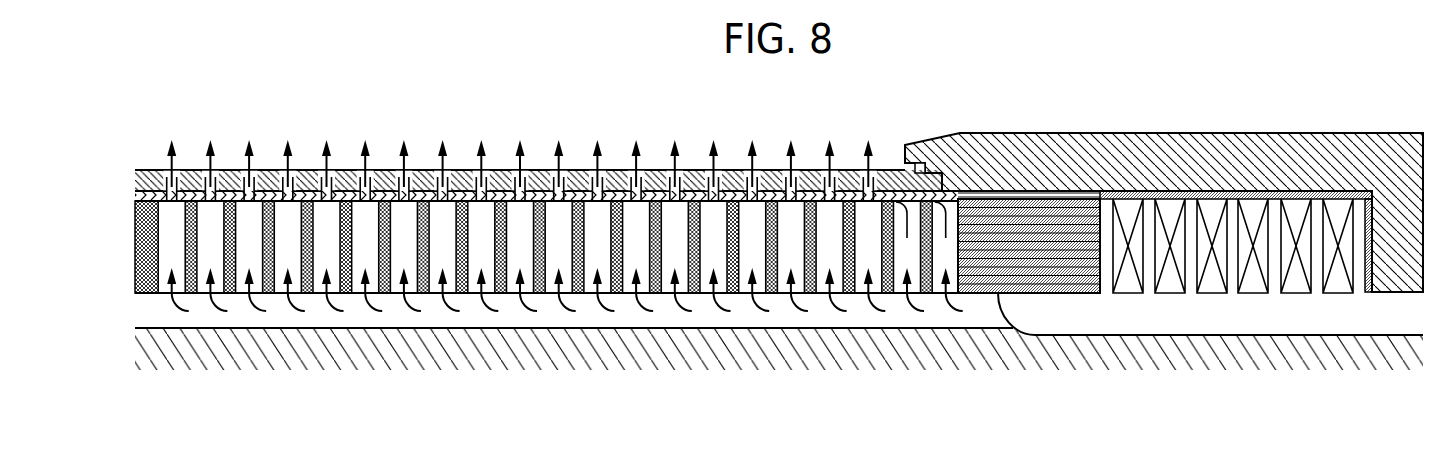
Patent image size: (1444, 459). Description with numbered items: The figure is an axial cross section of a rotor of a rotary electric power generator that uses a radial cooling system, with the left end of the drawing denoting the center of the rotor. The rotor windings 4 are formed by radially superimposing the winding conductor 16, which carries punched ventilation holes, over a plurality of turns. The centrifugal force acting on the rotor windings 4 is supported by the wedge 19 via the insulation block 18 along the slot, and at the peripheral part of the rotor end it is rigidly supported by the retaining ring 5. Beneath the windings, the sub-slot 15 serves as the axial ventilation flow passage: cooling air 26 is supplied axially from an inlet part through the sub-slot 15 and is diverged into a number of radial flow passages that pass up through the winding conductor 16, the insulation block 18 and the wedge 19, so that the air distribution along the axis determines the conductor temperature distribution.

The rotor windings 4 is at (1218, 294).
The retaining ring 5 is at (1105, 132).
The sub-slot 15 is at (903, 317).
The winding conductor 16 is at (748, 196).
The insulation block 18 is at (694, 185).
The wedge 19 is at (735, 197).
The cooling air 26 is at (1011, 310).